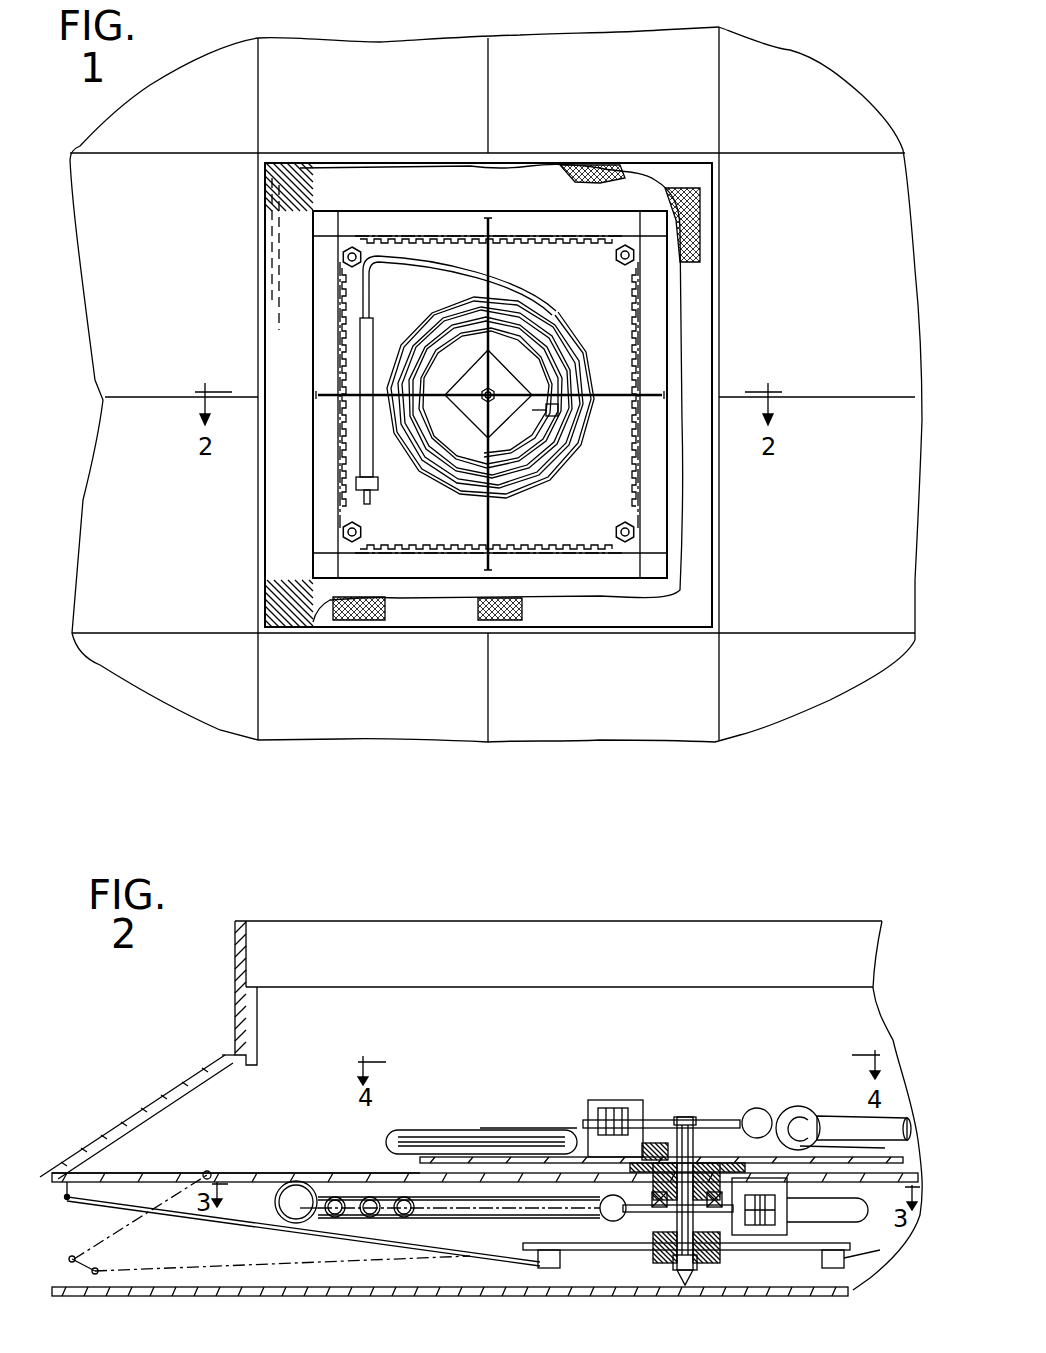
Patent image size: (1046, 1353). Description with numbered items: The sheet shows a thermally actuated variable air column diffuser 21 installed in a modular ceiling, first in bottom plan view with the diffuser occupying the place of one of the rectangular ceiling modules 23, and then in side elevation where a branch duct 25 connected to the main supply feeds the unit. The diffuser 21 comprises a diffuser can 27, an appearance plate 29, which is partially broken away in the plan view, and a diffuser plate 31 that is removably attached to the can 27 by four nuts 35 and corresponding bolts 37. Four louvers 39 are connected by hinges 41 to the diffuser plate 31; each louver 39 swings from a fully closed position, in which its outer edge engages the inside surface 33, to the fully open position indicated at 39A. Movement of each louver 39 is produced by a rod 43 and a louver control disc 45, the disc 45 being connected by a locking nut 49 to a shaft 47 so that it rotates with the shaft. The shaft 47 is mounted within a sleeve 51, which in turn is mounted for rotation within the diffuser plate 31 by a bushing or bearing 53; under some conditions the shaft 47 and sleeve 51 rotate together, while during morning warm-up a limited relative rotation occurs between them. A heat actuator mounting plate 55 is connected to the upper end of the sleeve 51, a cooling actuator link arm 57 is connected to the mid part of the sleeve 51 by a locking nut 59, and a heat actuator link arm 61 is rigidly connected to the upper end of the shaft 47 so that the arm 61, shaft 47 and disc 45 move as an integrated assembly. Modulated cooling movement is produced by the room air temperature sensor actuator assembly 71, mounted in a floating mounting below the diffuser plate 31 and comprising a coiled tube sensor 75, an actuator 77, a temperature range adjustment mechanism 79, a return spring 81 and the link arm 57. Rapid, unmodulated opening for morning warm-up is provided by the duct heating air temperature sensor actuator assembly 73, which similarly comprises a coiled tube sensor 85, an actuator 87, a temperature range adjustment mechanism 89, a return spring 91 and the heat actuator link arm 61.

In FIG. 1, the diffuser 21 is at (222, 276).
In FIG. 1, the module 23 is at (372, 108).
In FIG. 2, the branch duct 25 is at (247, 955).
In FIG. 1, the diffuser can 27 is at (632, 153).
In FIG. 2, the diffuser can 27 is at (198, 1065).
In FIG. 1, the appearance plate 29 is at (700, 238).
In FIG. 2, the appearance plate 29 is at (299, 1298).
In FIG. 2, the diffuser plate 31 is at (280, 1172).
In FIG. 1, the inside surface 33 is at (390, 206).
In FIG. 2, the inside surface 33 is at (196, 1082).
In FIG. 1, the nut 35 is at (365, 541).
In FIG. 1, the bolt 37 is at (362, 530).
In FIG. 1, the louver 39 is at (568, 222).
In FIG. 2, the louver 39 is at (154, 1172).
In FIG. 2, the louver fully open position 39A is at (127, 1240).
In FIG. 1, the hinge 41 is at (462, 238).
In FIG. 2, the hinge 41 is at (218, 1148).
In FIG. 1, the rod 43 is at (492, 258).
In FIG. 2, the rod 43 is at (221, 1218).
In FIG. 1, the louver control disc 45 is at (462, 373).
In FIG. 2, the louver control disc 45 is at (770, 1250).
In FIG. 1, the shaft 47 is at (490, 401).
In FIG. 2, the shaft 47 is at (686, 1272).
In FIG. 2, the locking nut 49 is at (694, 1272).
In FIG. 2, the sleeve 51 is at (713, 1216).
In FIG. 2, the bushing or bearing 53 is at (727, 1160).
In FIG. 2, the heat actuator mounting plate 55 is at (388, 1152).
In FIG. 2, the cooling actuator link arm 57 is at (628, 1214).
In FIG. 2, the locking nut 59 is at (656, 1232).
In FIG. 2, the heat actuator link arm 61 is at (640, 1117).
In FIG. 1, the room air temperature sensor actuator assembly 71 is at (548, 510).
In FIG. 2, the room air temperature sensor actuator assembly 71 is at (493, 1240).
In FIG. 2, the duct heating air temperature sensor actuator assembly 73 is at (563, 1109).
In FIG. 1, the coiled tube sensor 75 is at (556, 306).
In FIG. 2, the coiled tube sensor 75 is at (388, 1220).
In FIG. 2, the actuator 77 is at (790, 1193).
In FIG. 1, the temperature range adjustment mechanism 79 is at (372, 318).
In FIG. 2, the temperature range adjustment mechanism 79 is at (277, 1200).
In FIG. 2, the return spring 81 is at (605, 1220).
In FIG. 2, the coiled tube sensor 85 is at (430, 1133).
In FIG. 2, the actuator 87 is at (618, 1100).
In FIG. 2, the temperature range adjustment mechanism 89 is at (800, 1106).
In FIG. 2, the return spring 91 is at (757, 1108).